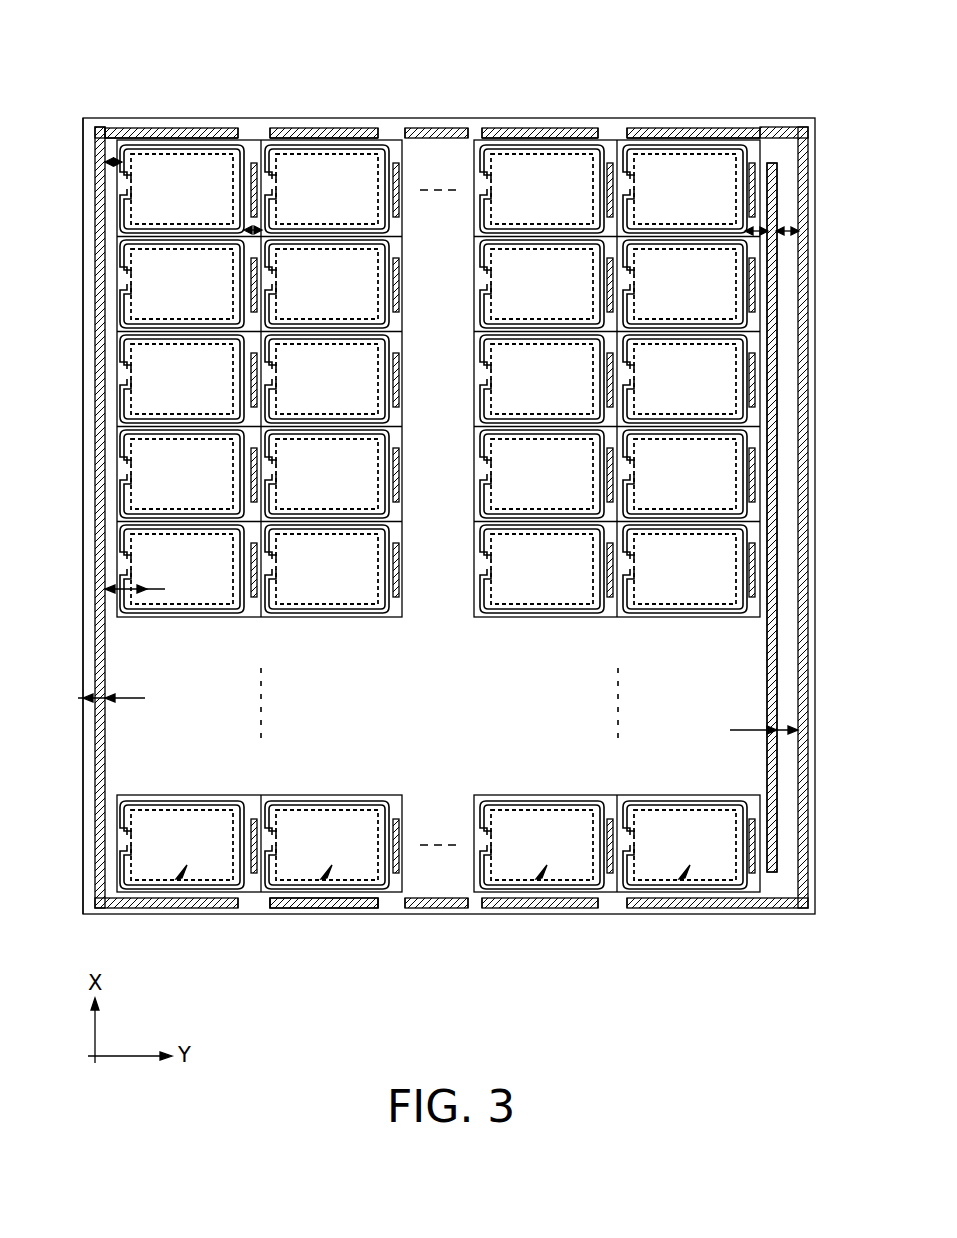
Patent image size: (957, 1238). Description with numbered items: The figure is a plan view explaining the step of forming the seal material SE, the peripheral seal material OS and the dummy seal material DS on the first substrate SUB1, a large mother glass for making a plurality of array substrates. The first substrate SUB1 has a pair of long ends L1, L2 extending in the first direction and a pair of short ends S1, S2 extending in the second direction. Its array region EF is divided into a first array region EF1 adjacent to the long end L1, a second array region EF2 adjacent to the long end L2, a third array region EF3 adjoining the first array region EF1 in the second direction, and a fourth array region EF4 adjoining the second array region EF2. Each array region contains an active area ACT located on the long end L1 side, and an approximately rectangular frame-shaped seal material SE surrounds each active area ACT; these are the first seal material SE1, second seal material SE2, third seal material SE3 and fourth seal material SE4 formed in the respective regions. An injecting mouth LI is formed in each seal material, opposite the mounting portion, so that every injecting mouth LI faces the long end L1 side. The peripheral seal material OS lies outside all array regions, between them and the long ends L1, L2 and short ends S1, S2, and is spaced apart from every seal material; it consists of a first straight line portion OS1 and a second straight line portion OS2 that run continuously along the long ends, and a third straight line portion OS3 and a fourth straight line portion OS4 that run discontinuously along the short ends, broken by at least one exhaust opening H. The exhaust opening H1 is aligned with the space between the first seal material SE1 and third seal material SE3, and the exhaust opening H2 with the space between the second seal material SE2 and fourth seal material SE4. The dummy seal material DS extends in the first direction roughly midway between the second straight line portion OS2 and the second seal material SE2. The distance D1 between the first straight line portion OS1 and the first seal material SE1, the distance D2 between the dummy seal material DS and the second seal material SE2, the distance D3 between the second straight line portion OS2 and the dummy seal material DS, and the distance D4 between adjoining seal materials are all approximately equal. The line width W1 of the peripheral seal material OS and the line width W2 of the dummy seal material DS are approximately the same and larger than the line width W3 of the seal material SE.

The peripheral seal material OS is at (97, 126).
The first straight line portion OS1 is at (108, 752).
The second straight line portion OS2 is at (775, 680).
The third straight line portion OS3 is at (760, 136).
The fourth straight line portion OS4 is at (333, 912).
The first seal material SE1 is at (155, 140).
The second seal material SE2 is at (665, 140).
The third seal material SE3 is at (305, 140).
The fourth seal material SE4 is at (530, 140).
The seal material SE is at (137, 892).
The first array region EF1 is at (195, 136).
The second array region EF2 is at (700, 136).
The third array region EF3 is at (347, 136).
The fourth array region EF4 is at (572, 136).
The array region EF is at (213, 895).
The exhaust opening H1 is at (259, 130).
The exhaust opening H2 is at (614, 130).
The exhaust opening H is at (395, 130).
The short end S1 is at (437, 127).
The short end S2 is at (437, 910).
The long end L1 is at (83, 538).
The long end L2 is at (803, 125).
The injecting mouth LI is at (118, 194).
The active area ACT is at (180, 908).
The dummy seal material DS is at (766, 768).
The first substrate SUB1 is at (812, 914).
The distance D1 is at (106, 161).
The distance D2 is at (746, 230).
The distance D3 is at (788, 233).
The distance D4 is at (246, 229).
The line width W1 is at (130, 697).
The line width W2 is at (750, 730).
The line width W3 is at (153, 588).